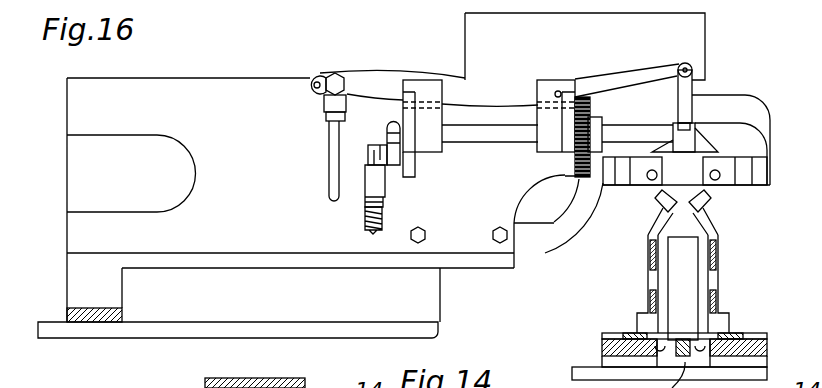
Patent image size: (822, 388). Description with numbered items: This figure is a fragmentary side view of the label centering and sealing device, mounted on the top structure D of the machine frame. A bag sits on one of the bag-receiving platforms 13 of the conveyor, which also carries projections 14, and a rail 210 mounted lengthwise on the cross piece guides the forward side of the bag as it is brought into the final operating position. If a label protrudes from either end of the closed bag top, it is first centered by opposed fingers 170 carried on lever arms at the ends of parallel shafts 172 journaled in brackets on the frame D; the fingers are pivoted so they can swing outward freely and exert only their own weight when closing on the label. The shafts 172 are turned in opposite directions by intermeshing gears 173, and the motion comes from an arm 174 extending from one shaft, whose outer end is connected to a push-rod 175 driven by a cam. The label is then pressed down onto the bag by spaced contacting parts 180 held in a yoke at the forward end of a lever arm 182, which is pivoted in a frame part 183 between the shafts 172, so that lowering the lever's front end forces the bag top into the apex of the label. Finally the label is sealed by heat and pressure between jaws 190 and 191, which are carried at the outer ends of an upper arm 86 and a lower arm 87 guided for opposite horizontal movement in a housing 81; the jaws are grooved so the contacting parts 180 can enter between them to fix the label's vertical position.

In FIG. 16, the housing 81 is at (268, 93).
In FIG. 16, the lever arm 182 is at (388, 80).
In FIG. 16, the frame part 183 is at (550, 87).
In FIG. 16, the parallel shafts 172 is at (508, 133).
In FIG. 16, the gear 173 is at (590, 108).
In FIG. 16, the upper arm 86 is at (730, 104).
In FIG. 16, the contacting parts 180 is at (703, 145).
In FIG. 16, the fingers 170 is at (685, 145).
In FIG. 16, the jaw 191 is at (645, 187).
In FIG. 16, the jaw 190 is at (722, 180).
In FIG. 16, the lower arm 87 is at (541, 244).
In FIG. 16, the arm 174 is at (392, 125).
In FIG. 16, the push-rod 175 is at (375, 232).
In FIG. 16, the projections 14 is at (685, 250).
In FIG. 16, the rail 210 is at (655, 300).
In FIG. 16, the bag-receiving platforms 13 is at (682, 341).
In FIG. 16, the top structure D is at (93, 334).
In FIG. 14, the top structure D is at (262, 378).